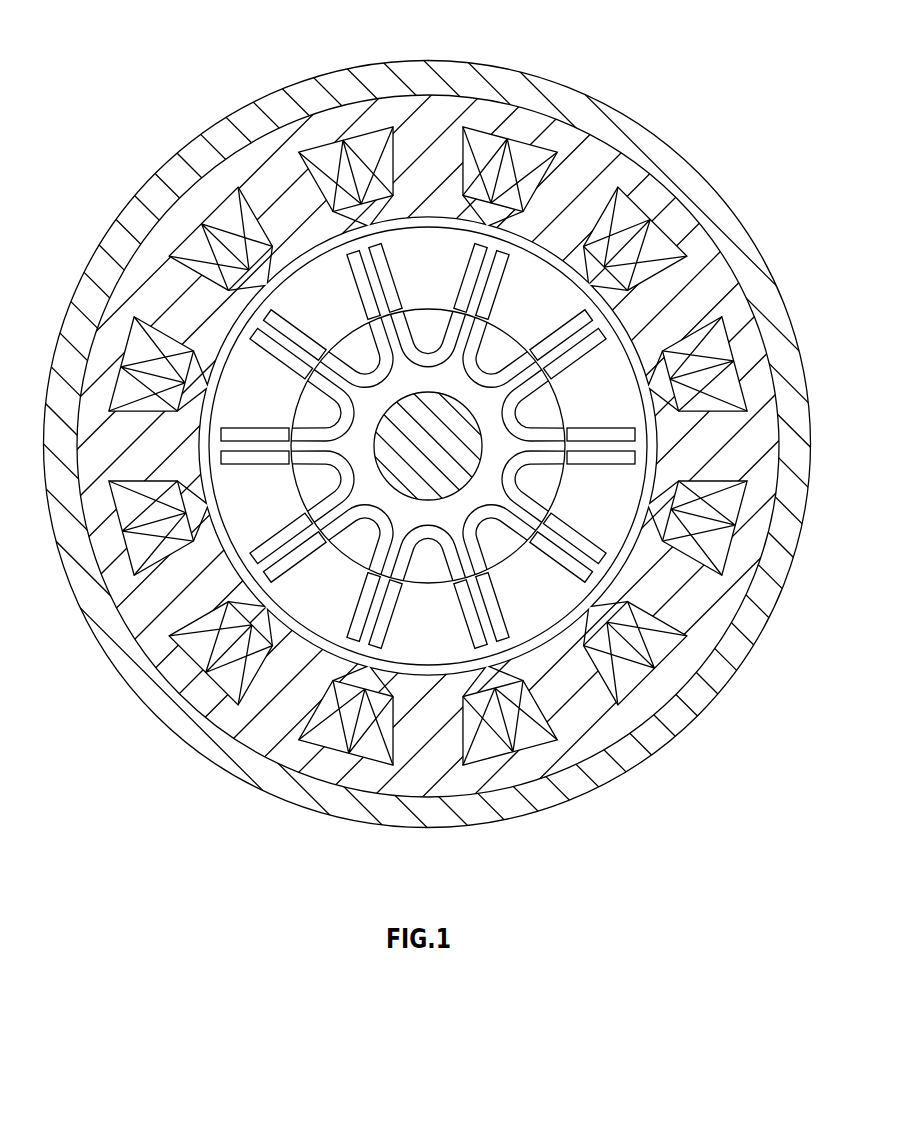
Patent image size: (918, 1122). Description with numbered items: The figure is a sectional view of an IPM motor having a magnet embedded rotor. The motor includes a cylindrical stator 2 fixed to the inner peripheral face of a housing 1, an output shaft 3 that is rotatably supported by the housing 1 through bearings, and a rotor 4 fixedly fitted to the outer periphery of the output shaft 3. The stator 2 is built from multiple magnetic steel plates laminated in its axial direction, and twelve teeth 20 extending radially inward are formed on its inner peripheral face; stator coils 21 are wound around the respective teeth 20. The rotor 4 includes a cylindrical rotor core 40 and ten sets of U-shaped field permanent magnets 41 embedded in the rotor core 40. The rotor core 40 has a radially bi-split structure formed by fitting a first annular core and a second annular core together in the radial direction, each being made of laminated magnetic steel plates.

The housing 1 is at (438, 70).
The stator 2 is at (417, 102).
The teeth 20 is at (571, 174).
The stator coils 21 is at (618, 212).
The output shaft 3 is at (419, 456).
The rotor 4 is at (406, 222).
The rotor core 40 is at (441, 235).
The U-shaped field permanent magnets 41 is at (408, 329).